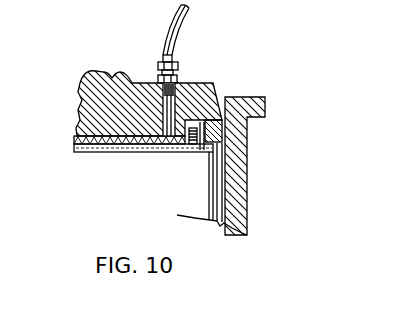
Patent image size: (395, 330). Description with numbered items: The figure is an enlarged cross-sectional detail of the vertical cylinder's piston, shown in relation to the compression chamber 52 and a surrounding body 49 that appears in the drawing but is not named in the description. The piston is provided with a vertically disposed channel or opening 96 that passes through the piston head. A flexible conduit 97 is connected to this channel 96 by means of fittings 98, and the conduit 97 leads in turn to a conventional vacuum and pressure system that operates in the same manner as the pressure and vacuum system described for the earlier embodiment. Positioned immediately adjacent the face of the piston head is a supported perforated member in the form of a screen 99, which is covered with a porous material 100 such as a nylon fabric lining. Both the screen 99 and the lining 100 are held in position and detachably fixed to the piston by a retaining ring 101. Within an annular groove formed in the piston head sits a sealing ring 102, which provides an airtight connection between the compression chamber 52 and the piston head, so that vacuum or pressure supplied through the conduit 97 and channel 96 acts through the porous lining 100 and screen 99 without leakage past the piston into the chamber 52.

The block 49 is at (97, 81).
The compression chamber 52 is at (248, 180).
The vertically disposed channel 96 is at (177, 117).
The flexible conduit 97 is at (172, 19).
The fittings 98 is at (179, 65).
The screen 99 is at (75, 140).
The porous material 100 is at (168, 149).
The retaining ring 101 is at (212, 155).
The sealing ring 102 is at (222, 131).